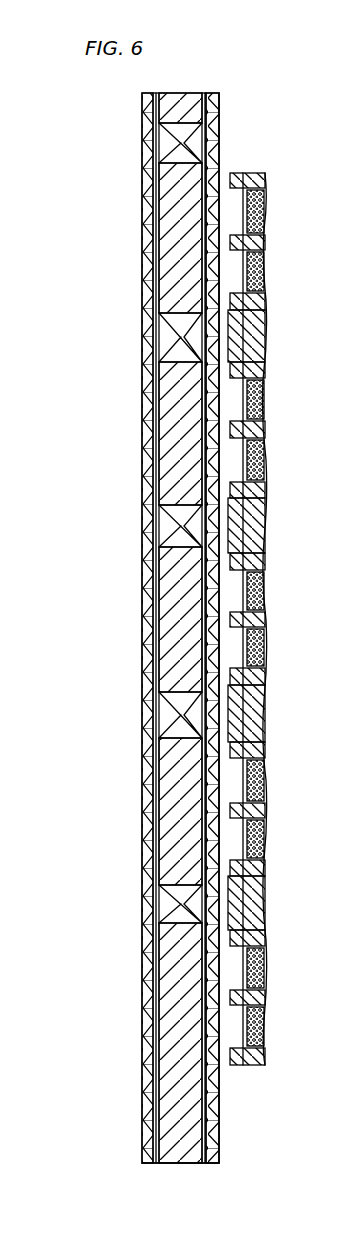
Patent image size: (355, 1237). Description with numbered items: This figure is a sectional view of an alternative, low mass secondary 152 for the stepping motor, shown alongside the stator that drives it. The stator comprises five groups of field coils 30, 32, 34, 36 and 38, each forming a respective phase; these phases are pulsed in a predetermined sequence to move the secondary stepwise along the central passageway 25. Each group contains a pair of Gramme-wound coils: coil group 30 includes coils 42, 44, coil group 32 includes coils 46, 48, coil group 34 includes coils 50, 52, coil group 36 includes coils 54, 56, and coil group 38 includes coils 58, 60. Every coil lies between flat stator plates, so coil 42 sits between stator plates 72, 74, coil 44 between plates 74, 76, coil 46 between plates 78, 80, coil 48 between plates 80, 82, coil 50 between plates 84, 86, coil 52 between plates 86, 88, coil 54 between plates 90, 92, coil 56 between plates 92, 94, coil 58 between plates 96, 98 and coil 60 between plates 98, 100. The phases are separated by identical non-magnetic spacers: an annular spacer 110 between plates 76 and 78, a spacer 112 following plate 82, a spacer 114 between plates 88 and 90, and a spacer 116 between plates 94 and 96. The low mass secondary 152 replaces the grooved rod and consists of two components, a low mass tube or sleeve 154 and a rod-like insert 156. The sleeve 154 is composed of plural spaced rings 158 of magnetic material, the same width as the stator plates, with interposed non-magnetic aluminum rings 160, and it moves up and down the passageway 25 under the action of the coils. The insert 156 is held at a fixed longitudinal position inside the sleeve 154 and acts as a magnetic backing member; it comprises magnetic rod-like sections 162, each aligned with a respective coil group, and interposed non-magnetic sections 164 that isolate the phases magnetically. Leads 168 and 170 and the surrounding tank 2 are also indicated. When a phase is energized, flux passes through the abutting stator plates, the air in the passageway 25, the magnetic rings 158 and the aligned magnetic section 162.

The tank 2 is at (351, 851).
The central passageway 25 is at (232, 1068).
The coil group 30 is at (280, 242).
The coil group 32 is at (286, 414).
The coil group 34 is at (284, 608).
The coil group 36 is at (281, 802).
The coil group 38 is at (281, 1020).
The coil 42 is at (262, 214).
The coil 44 is at (262, 258).
The coil 46 is at (265, 390).
The coil 48 is at (264, 462).
The coil 50 is at (264, 593).
The coil 52 is at (263, 652).
The coil 54 is at (263, 771).
The coil 56 is at (263, 840).
The coil 58 is at (263, 966).
The coil 60 is at (263, 1040).
The stator plate 72 is at (245, 178).
The stator plate 74 is at (283, 247).
The stator plate 76 is at (264, 297).
The stator plate 78 is at (282, 356).
The stator plate 80 is at (263, 430).
The stator plate 82 is at (265, 491).
The stator plate 84 is at (264, 561).
The stator plate 86 is at (263, 625).
The stator plate 88 is at (264, 682).
The stator plate 90 is at (263, 752).
The stator plate 92 is at (263, 816).
The stator plate 94 is at (264, 870).
The stator plate 96 is at (263, 941).
The stator plate 98 is at (263, 992).
The stator plate 100 is at (263, 1064).
The annular spacer 110 is at (255, 340).
The spacer 112 is at (255, 525).
The spacer 114 is at (258, 716).
The spacer 116 is at (256, 910).
The low mass secondary 152 is at (205, 1170).
The sleeve 154 is at (222, 1164).
The insert 156 is at (150, 1167).
The magnetic rings 158 is at (216, 228).
The non-magnetic rings 160 is at (203, 242).
The magnetic sections 162 is at (175, 396).
The non-magnetic sections 164 is at (172, 337).
The lead 168 is at (270, 972).
The lead 170 is at (270, 1052).